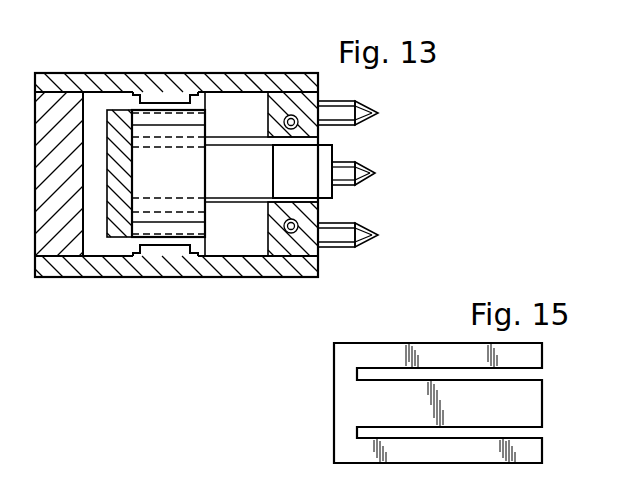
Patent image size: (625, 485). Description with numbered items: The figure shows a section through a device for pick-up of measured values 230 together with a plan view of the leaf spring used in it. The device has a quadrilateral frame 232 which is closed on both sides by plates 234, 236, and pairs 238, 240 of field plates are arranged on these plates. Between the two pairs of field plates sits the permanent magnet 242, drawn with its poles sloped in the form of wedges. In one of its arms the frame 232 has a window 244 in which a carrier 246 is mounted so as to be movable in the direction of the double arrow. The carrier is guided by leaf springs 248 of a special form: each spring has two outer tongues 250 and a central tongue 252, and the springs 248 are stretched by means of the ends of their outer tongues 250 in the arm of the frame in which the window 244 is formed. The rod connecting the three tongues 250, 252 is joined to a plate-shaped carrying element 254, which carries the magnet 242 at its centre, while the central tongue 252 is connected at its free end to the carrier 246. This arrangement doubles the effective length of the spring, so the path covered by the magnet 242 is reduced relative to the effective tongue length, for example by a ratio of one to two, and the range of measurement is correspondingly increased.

In FIG. 13, the device for pick-up of measured values 230 is at (289, 66).
In FIG. 13, the quadrilateral frame 232 is at (52, 98).
In FIG. 13, the plate 234 is at (205, 82).
In FIG. 13, the plate 236 is at (217, 268).
In FIG. 13, the pair of field plates 238 is at (158, 96).
In FIG. 13, the pair of field plates 240 is at (162, 249).
In FIG. 13, the permanent magnet 242 is at (142, 183).
In FIG. 13, the window 244 is at (318, 141).
In FIG. 13, the carrier 246 is at (323, 158).
In FIG. 15, the leaf spring 248 is at (427, 333).
In FIG. 13, the outer tongues 250 is at (243, 120).
In FIG. 15, the outer tongues 250 is at (535, 355).
In FIG. 13, the central tongue 252 is at (248, 181).
In FIG. 15, the central tongue 252 is at (535, 403).
In FIG. 13, the carrying element 254 is at (115, 120).